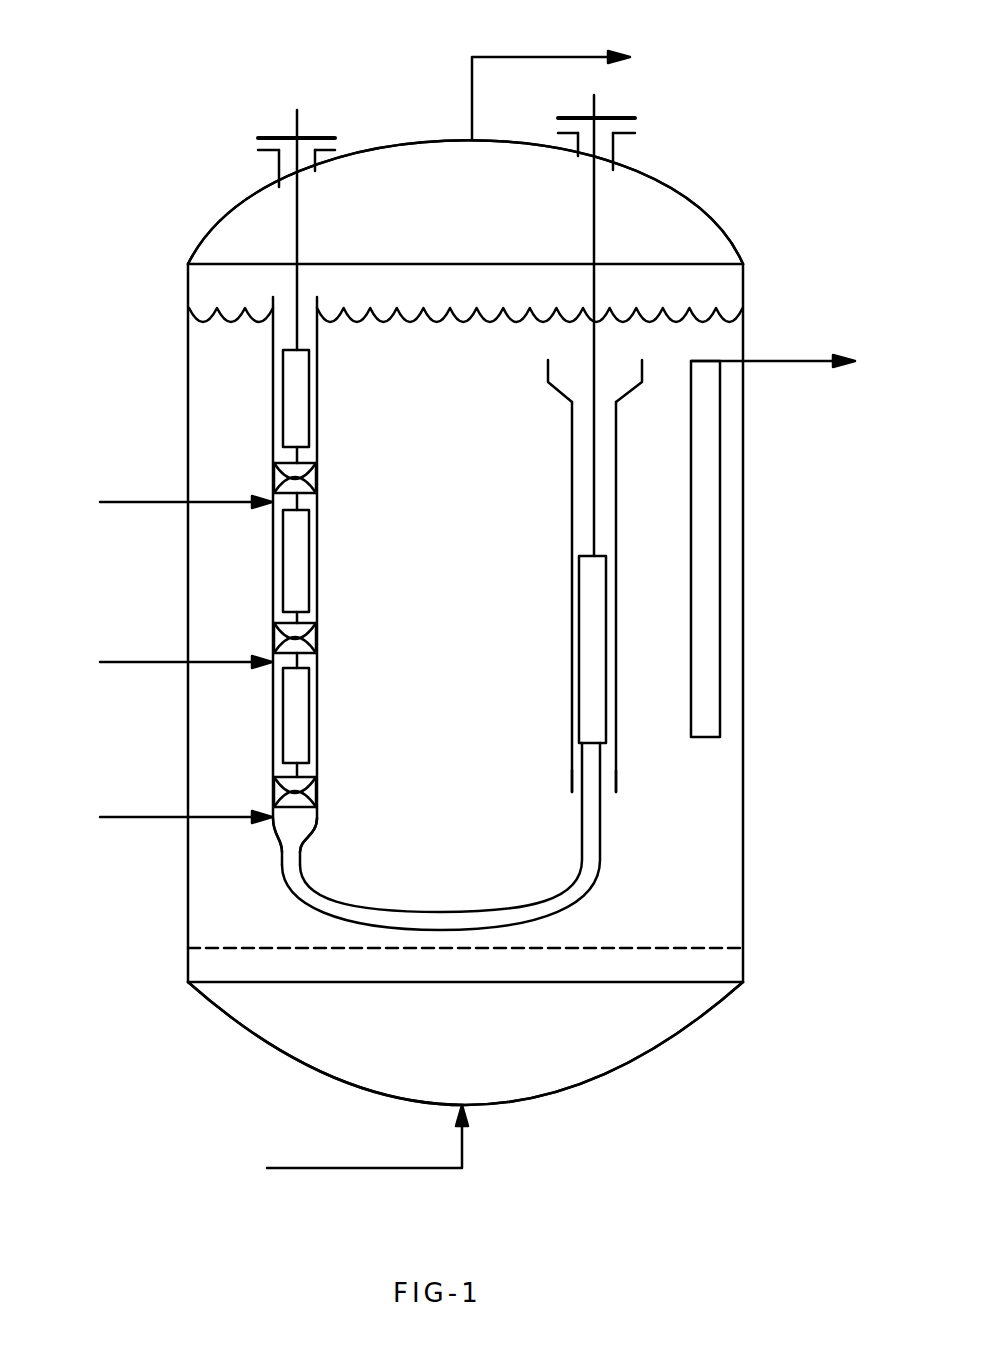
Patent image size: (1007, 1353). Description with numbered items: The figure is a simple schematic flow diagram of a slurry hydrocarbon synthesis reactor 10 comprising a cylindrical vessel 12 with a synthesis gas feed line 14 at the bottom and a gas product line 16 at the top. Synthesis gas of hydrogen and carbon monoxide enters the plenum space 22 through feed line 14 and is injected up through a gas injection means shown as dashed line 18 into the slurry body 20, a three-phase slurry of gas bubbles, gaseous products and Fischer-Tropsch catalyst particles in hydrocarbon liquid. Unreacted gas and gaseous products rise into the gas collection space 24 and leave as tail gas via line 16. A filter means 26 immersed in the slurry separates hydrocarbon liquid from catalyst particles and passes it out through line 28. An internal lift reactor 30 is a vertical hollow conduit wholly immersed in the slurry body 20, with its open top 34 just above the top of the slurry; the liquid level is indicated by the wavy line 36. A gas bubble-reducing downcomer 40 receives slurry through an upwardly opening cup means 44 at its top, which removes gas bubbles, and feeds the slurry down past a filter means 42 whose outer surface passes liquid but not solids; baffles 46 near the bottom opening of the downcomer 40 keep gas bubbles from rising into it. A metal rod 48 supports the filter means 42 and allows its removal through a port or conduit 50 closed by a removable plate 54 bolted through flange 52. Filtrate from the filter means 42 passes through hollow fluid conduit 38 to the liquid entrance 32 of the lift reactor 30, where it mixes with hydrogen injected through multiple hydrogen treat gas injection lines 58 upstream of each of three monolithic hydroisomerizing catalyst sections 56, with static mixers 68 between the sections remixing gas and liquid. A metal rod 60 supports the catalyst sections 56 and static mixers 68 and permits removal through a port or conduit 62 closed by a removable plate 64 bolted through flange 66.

The slurry hydrocarbon synthesis reactor 10 is at (148, 100).
The cylindrical vessel 12 is at (720, 235).
The synthesis gas feed line 14 is at (388, 1168).
The gas product line 16 is at (520, 57).
The gas injection means 18 is at (713, 948).
The slurry body 20 is at (710, 782).
The plenum space 22 is at (475, 1044).
The gas collection space 24 is at (482, 244).
The filter means 26 is at (722, 580).
The line 28 is at (790, 362).
The internal lift reactor 30 is at (273, 343).
The liquid entrance 32 is at (305, 832).
The open top 34 is at (305, 303).
The liquid level 36 is at (468, 322).
The hollow fluid conduit 38 is at (445, 912).
The gas bubble-reducing downcomer 40 is at (572, 500).
The filter means 42 is at (592, 672).
The upwardly opening cup means 44 is at (548, 366).
The baffles 46 is at (573, 808).
The metal rod 48 is at (594, 236).
The port or conduit 50 is at (615, 159).
The flange 52 is at (616, 140).
The removable plate 54 is at (610, 118).
The monolithic hydroisomerizing catalyst sections 56 is at (295, 395).
The hydrogen treat gas injection lines 58 is at (148, 500).
The metal rod 60 is at (297, 235).
The port or conduit 62 is at (277, 176).
The removable plate 64 is at (272, 137).
The flange 66 is at (258, 152).
The static mixers 68 is at (312, 478).